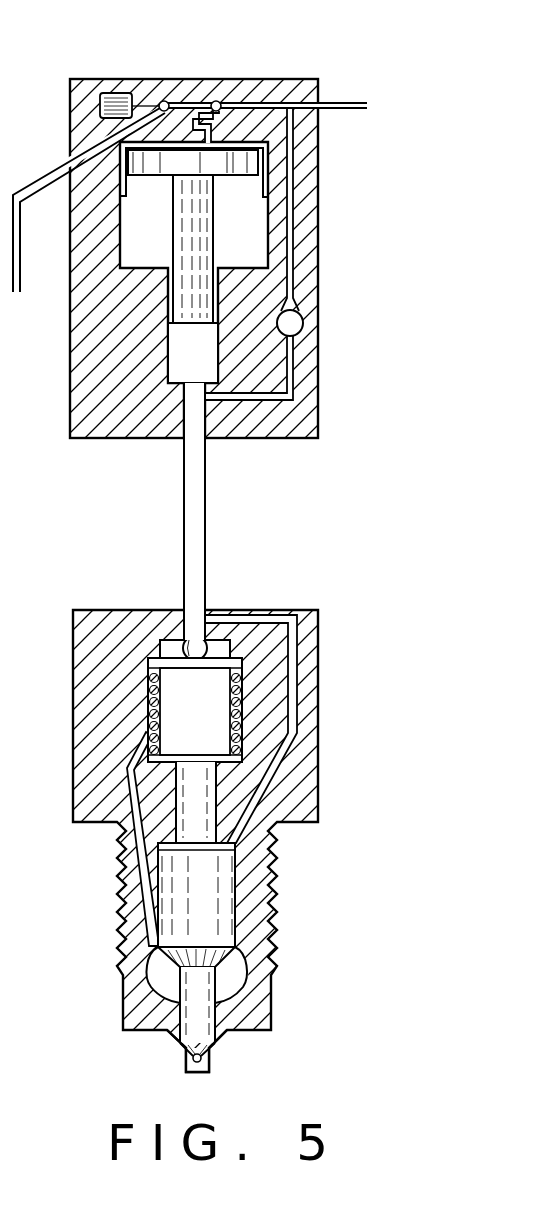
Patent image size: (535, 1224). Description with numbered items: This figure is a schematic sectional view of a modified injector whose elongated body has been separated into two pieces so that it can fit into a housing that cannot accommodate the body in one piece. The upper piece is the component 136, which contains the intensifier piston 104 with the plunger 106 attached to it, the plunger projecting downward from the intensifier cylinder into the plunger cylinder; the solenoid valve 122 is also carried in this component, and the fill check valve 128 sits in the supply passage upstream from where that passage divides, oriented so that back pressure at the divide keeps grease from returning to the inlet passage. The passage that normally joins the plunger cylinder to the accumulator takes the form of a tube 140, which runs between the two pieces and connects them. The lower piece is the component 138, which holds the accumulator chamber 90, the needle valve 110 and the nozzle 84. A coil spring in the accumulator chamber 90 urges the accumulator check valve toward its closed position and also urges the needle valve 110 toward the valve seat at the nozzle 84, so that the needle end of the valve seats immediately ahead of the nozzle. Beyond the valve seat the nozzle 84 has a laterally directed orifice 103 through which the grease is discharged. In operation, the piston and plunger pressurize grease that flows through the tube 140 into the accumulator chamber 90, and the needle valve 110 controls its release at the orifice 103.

The nozzle 84 is at (208, 1057).
The accumulator chamber 90 is at (203, 706).
The orifice 103 is at (191, 1057).
The intensifier piston 104 is at (234, 167).
The plunger 106 is at (197, 233).
The needle valve 110 is at (208, 890).
The solenoid valve 122 is at (216, 100).
The fill check valve 128 is at (293, 329).
The component 136 is at (326, 144).
The component 138 is at (326, 648).
The tube 140 is at (206, 497).